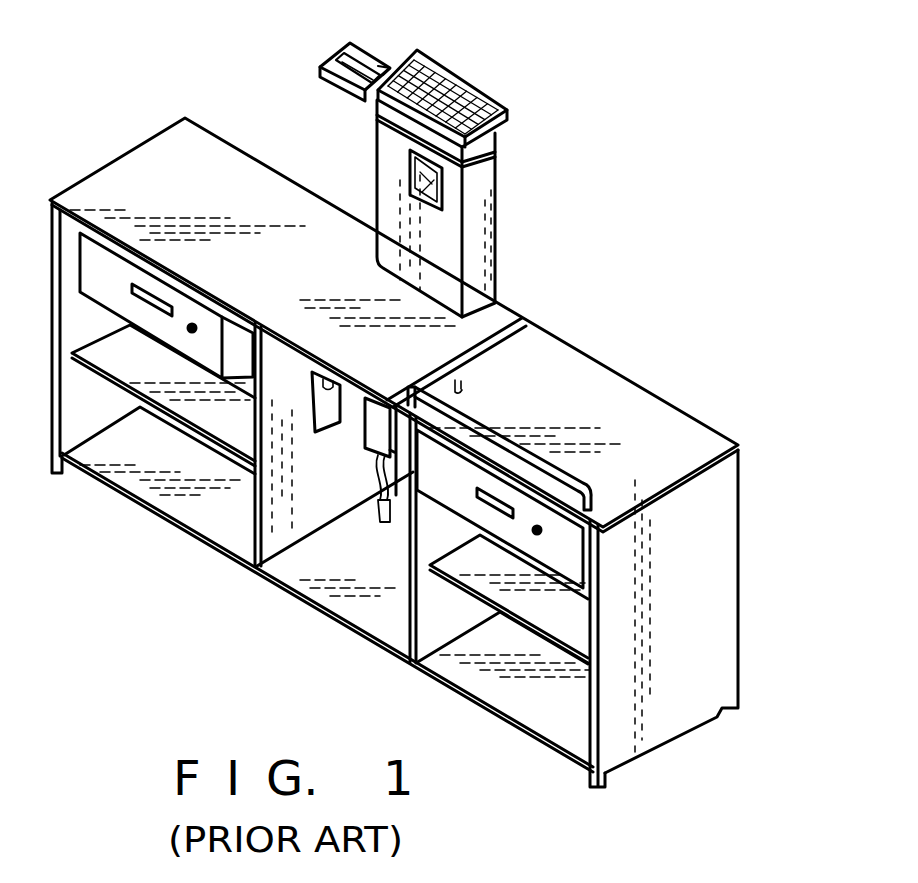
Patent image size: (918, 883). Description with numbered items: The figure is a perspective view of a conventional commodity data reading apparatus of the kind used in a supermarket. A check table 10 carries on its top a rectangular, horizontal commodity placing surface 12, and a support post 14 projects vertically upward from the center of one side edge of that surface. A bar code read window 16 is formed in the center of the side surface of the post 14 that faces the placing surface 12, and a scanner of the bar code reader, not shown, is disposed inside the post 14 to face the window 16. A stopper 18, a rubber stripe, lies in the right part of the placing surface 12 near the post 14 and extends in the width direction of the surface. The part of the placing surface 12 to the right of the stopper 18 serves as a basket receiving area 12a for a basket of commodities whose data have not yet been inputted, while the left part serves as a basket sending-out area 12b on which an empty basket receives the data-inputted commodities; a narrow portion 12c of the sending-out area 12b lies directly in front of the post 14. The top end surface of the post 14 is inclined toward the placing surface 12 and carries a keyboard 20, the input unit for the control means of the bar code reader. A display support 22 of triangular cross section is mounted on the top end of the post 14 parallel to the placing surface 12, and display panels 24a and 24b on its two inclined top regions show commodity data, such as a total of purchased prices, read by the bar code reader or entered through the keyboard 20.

The check table 10 is at (423, 417).
The commodity placing surface 12 is at (222, 158).
The basket receiving area 12a is at (600, 378).
The basket sending-out area 12b is at (95, 183).
The narrow portion 12c is at (335, 336).
The support post 14 is at (420, 158).
The bar code read window 16 is at (408, 170).
The stopper 18 is at (527, 295).
The keyboard 20 is at (462, 96).
The display support 22 is at (375, 50).
The display panel 24a is at (362, 56).
The display panel 24b is at (385, 66).